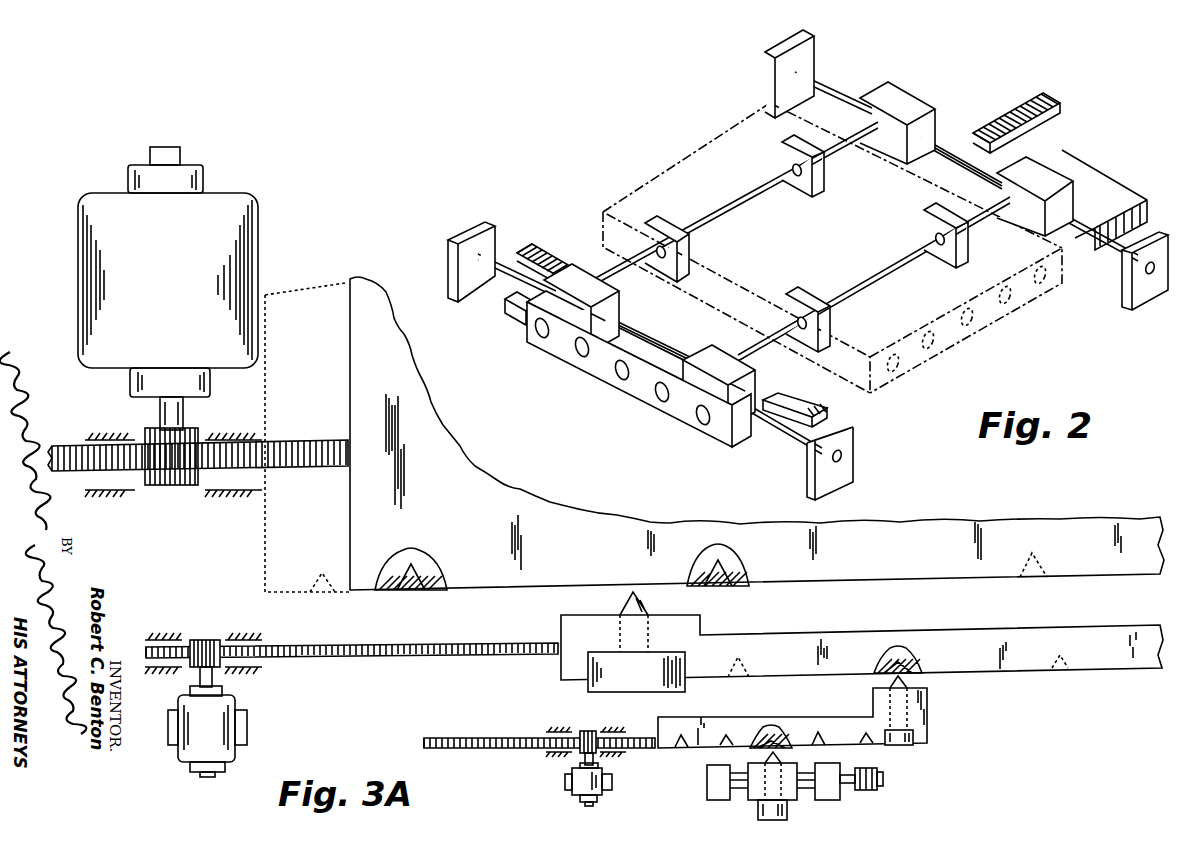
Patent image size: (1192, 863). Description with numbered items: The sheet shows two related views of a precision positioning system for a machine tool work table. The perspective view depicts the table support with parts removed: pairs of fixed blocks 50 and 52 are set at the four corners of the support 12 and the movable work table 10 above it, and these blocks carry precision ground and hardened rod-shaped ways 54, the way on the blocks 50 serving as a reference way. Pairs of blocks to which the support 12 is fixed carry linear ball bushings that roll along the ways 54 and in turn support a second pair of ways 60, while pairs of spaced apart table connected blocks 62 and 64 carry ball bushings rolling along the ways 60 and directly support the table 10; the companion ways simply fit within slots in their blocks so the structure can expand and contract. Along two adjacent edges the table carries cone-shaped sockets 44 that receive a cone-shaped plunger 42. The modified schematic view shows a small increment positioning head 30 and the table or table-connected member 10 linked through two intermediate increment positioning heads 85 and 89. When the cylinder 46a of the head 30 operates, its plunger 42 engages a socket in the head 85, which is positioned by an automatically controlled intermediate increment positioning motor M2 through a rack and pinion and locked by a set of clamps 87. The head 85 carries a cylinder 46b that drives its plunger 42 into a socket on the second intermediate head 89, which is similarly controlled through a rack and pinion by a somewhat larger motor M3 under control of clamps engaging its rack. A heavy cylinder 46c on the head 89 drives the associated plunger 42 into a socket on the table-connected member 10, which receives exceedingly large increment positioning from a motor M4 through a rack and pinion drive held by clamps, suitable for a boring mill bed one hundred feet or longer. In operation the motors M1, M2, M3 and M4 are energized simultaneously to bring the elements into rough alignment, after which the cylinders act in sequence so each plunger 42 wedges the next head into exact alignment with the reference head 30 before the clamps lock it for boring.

In FIG. 2, the work table 10 is at (642, 200).
In FIG. 3A, the work table 10 is at (572, 505).
In FIG. 2, the support 12 is at (1027, 92).
In FIG. 3A, the indexing head 30 is at (797, 800).
In FIG. 3A, the cone-shaped plunger 42 is at (620, 602).
In FIG. 2, the cone-shaped sockets 44 is at (972, 326).
In FIG. 3A, the cylinder 46a is at (758, 810).
In FIG. 3A, the cylinder 46b is at (913, 746).
In FIG. 3A, the cylinder 46c is at (656, 690).
In FIG. 2, the fixed blocks 50 is at (494, 230).
In FIG. 2, the fixed blocks 52 is at (814, 53).
In FIG. 2, the rod-shaped ways 54 is at (940, 150).
In FIG. 2, the ways 60 is at (770, 194).
In FIG. 2, the table connected blocks 62 is at (940, 258).
In FIG. 2, the table connected blocks 64 is at (830, 175).
In FIG. 3A, the intermediate increment positioning head 85 is at (842, 720).
In FIG. 3A, the clamps 87 is at (560, 752).
In FIG. 3A, the second intermediate increment positioning head 89 is at (732, 645).
In FIG. 3A, the motor M1 is at (880, 780).
In FIG. 3A, the intermediate increment positioning motor M2 is at (612, 784).
In FIG. 3A, the motor M3 is at (238, 745).
In FIG. 3A, the motor M4 is at (260, 206).